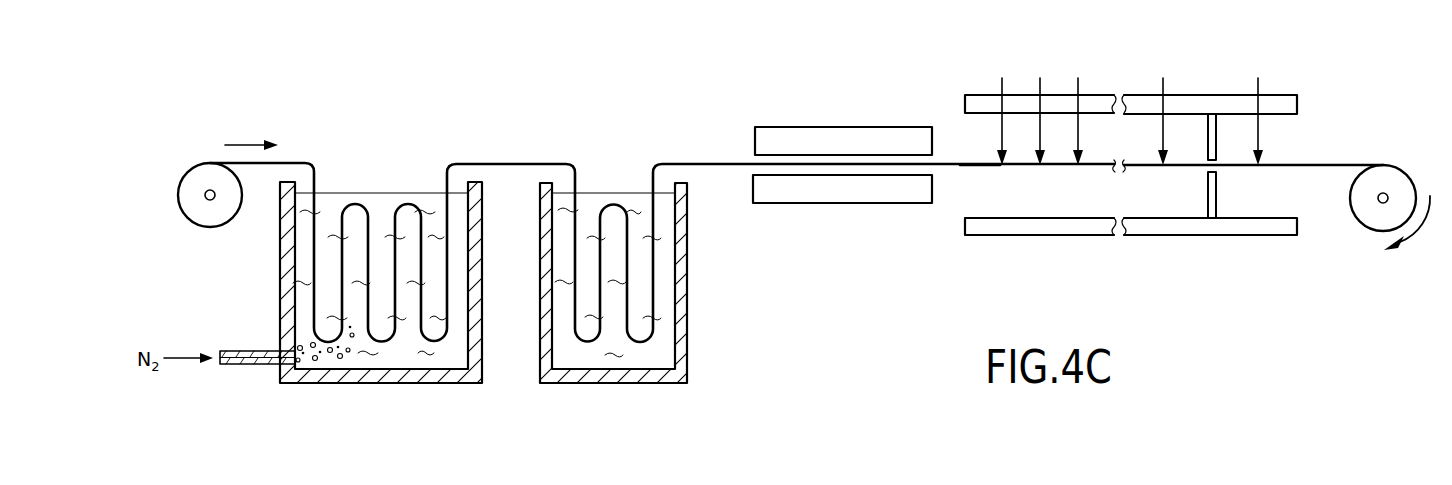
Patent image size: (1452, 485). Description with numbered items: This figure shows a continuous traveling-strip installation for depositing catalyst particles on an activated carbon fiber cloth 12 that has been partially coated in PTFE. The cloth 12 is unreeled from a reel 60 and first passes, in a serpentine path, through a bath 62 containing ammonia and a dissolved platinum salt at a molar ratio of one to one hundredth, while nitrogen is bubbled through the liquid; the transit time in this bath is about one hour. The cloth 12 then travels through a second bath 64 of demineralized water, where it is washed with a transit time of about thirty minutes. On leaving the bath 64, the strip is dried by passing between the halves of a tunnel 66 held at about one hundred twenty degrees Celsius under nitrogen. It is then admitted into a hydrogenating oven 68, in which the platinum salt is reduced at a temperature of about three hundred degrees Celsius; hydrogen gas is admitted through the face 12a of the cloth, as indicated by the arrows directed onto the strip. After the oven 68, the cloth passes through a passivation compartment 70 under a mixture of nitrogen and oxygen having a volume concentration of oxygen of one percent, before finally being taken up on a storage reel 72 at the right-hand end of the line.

The cloth 12 is at (508, 164).
The face of the cloth 12a is at (968, 165).
The reel 60 is at (219, 227).
The bath 62 is at (380, 384).
The bath 64 is at (632, 384).
The tunnel 66 is at (830, 199).
The hydrogenating oven 68 is at (1037, 236).
The passivation compartment 70 is at (1254, 236).
The storage reel 72 is at (1407, 177).